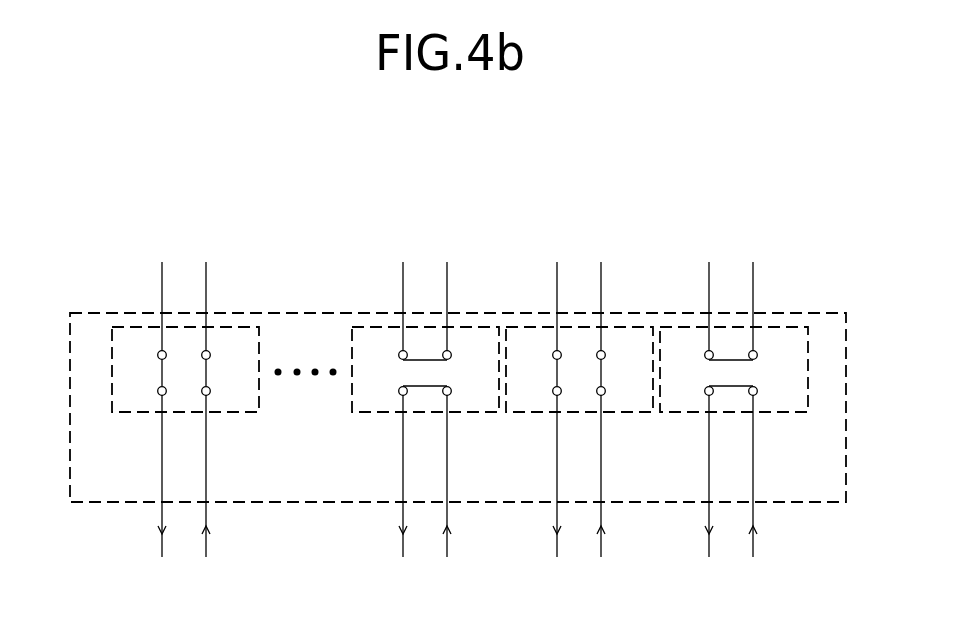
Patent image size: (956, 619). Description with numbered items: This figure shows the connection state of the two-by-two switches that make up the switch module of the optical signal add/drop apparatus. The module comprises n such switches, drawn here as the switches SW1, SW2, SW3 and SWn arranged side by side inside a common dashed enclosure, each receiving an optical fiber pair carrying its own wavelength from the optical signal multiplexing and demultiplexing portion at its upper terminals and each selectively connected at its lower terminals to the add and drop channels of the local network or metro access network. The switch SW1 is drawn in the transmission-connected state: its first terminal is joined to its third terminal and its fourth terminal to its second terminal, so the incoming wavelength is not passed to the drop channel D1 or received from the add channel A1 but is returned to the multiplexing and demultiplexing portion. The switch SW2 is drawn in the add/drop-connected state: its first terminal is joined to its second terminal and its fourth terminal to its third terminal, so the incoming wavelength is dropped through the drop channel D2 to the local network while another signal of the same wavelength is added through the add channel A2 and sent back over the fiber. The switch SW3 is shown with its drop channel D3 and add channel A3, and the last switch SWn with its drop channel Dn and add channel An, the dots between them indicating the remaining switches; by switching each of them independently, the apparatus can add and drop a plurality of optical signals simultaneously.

The 2×2 switch SW1 is at (765, 413).
The 2×2 switch SW2 is at (609, 412).
The 2×2 switch SW3 is at (458, 412).
The 2×2 switch SWn is at (217, 412).
The drop channel D1 is at (706, 412).
The drop channel D2 is at (555, 412).
The drop channel D3 is at (399, 412).
The drop channel Dn is at (160, 412).
The add channel A1 is at (754, 412).
The add channel A2 is at (601, 412).
The add channel A3 is at (448, 412).
The add channel An is at (207, 412).